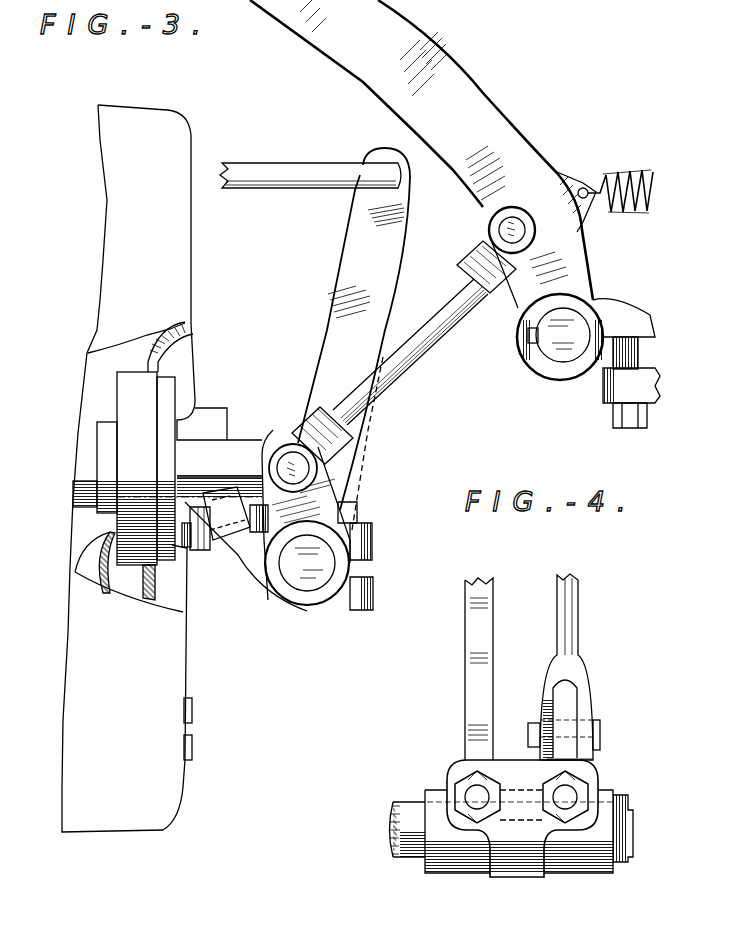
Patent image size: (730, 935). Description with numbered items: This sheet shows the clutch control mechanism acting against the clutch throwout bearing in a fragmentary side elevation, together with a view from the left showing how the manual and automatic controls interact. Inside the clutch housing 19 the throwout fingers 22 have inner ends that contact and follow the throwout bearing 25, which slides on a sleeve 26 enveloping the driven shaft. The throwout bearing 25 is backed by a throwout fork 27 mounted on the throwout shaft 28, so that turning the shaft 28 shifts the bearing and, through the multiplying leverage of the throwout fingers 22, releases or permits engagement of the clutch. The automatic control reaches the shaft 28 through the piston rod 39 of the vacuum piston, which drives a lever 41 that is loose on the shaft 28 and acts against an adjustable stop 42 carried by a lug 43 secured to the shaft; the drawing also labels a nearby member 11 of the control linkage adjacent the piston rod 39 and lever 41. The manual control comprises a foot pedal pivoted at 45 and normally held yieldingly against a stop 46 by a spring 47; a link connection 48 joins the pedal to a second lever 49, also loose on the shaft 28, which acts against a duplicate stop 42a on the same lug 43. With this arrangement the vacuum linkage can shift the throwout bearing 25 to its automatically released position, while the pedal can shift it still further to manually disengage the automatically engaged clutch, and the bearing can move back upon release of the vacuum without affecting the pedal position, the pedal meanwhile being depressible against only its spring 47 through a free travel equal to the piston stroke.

In FIG. 3, the brake lever 11 is at (363, 252).
In FIG. 3, the housing 19 is at (183, 258).
In FIG. 3, the throwout fingers 22 is at (75, 572).
In FIG. 3, the throwout bearing 25 is at (175, 461).
In FIG. 3, the sleeve 26 is at (90, 497).
In FIG. 3, the throwout fork 27 is at (264, 460).
In FIG. 3, the shaft 28 is at (322, 570).
In FIG. 4, the shaft 28 is at (413, 815).
In FIG. 3, the piston rod 39 is at (260, 170).
In FIG. 4, the lever 41 is at (478, 630).
In FIG. 3, the adjustable stop 42 is at (261, 602).
In FIG. 4, the adjustable stop 42 is at (476, 797).
In FIG. 3, the duplicate stop 42a is at (250, 537).
In FIG. 4, the duplicate stop 42a is at (567, 797).
In FIG. 3, the lug 43 is at (247, 538).
In FIG. 3, the pedal pivot 45 is at (547, 350).
In FIG. 3, the stop 46 is at (625, 352).
In FIG. 3, the spring 47 is at (632, 212).
In FIG. 3, the link connection 48 is at (417, 343).
In FIG. 4, the link connection 48 is at (572, 630).
In FIG. 3, the lever 49 is at (307, 500).
In FIG. 4, the lever 49 is at (563, 752).